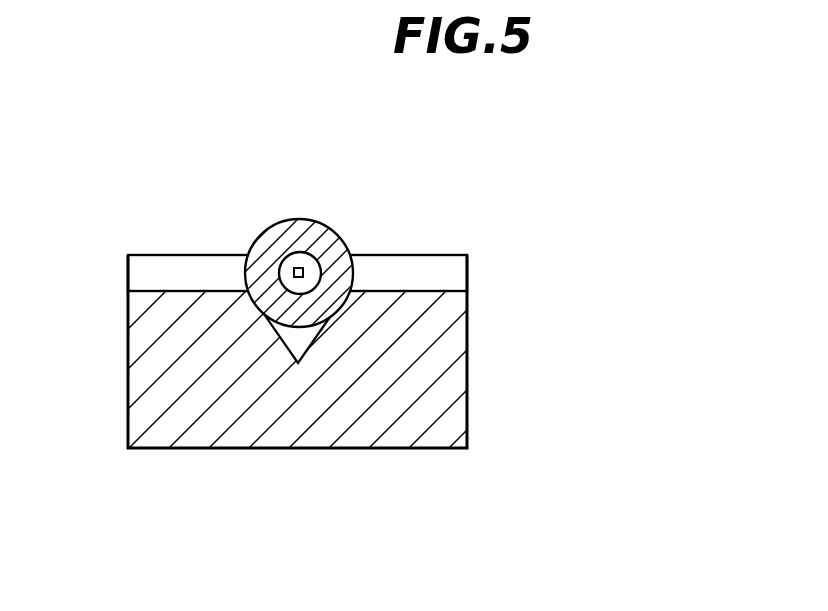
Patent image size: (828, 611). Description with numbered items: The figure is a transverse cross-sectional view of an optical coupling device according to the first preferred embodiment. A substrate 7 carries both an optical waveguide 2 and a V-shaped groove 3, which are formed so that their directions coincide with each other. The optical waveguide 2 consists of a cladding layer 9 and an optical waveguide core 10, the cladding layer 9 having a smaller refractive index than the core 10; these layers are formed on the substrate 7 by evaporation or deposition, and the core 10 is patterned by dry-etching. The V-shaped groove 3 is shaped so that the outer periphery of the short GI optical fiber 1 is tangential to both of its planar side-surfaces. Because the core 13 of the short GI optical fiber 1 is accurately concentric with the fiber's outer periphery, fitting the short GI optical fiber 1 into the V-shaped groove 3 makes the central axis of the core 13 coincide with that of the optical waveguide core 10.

The short GI optical fiber 1 is at (235, 73).
The optical waveguide 2 is at (523, 193).
The V-shaped groove 3 is at (283, 343).
The substrate 7 is at (300, 428).
The cladding layer 9 is at (457, 279).
The optical waveguide core 10 is at (304, 269).
The core of the short GI optical fiber 13 is at (293, 271).